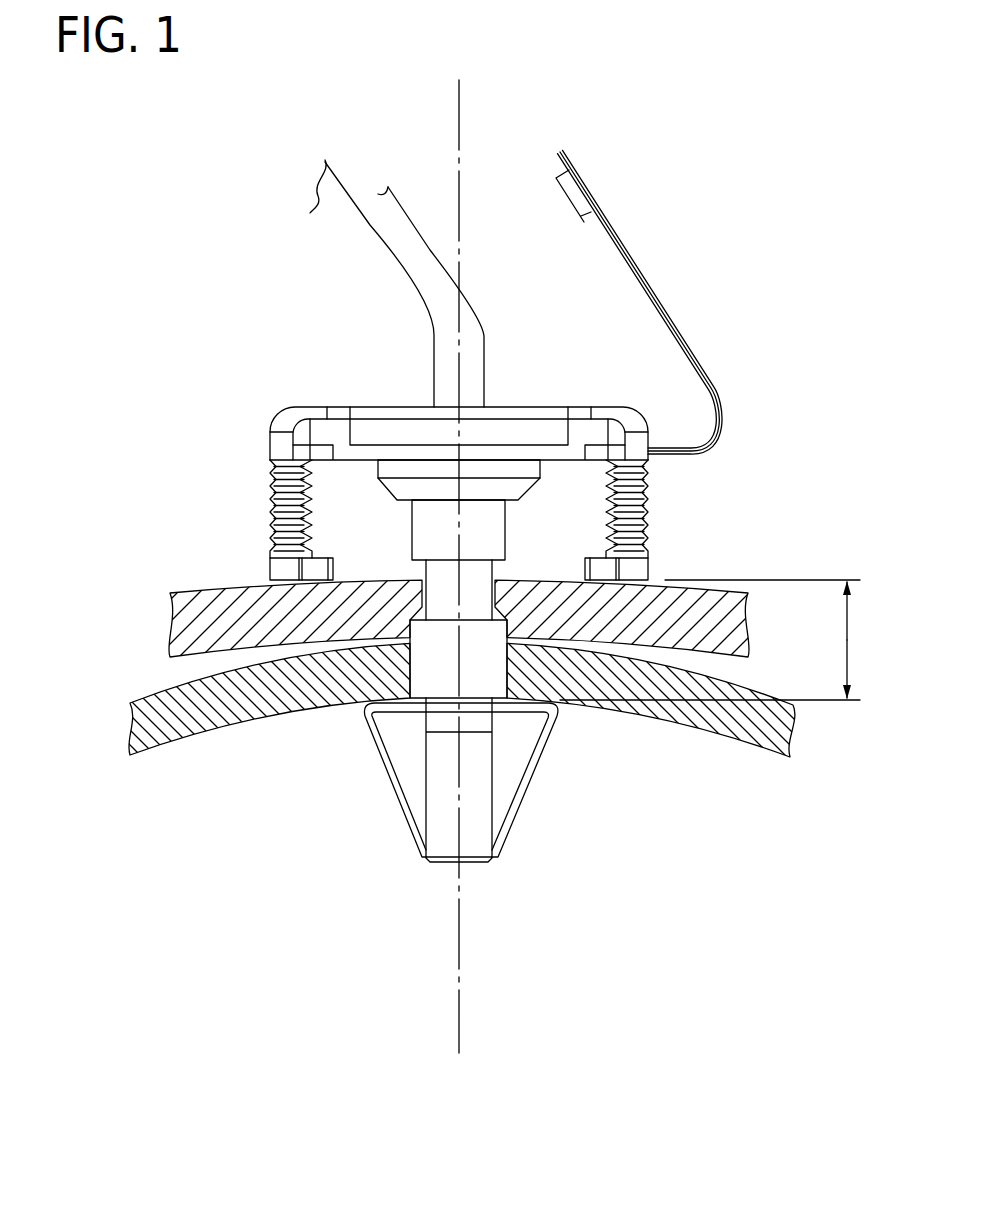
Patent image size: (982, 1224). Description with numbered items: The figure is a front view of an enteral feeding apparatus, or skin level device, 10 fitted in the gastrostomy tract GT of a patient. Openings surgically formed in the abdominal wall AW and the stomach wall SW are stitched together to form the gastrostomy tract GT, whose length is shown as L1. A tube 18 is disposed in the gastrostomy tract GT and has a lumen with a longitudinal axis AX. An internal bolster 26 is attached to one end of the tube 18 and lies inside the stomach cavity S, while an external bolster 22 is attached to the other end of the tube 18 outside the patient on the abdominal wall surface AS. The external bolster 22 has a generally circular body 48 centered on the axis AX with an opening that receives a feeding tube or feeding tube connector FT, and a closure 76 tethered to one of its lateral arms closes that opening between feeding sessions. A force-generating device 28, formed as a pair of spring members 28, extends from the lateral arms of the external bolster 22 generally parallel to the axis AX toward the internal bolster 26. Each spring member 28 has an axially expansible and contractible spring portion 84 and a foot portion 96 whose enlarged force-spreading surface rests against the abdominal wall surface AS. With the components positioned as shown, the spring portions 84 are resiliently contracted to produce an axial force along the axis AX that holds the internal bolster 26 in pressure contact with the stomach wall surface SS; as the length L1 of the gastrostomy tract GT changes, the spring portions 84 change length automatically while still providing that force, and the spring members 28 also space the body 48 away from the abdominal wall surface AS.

The enteral feeding apparatus 10 is at (245, 313).
The external bolster 22 is at (366, 402).
The body 48 is at (517, 400).
The closure 76 is at (638, 258).
The force-generating device 28 is at (268, 478).
The spring portion 84 is at (272, 516).
The foot portion 96 is at (267, 582).
The tube 18 is at (423, 577).
The internal bolster 26 is at (367, 805).
The feeding tube FT is at (388, 188).
The abdominal wall surface AS is at (197, 593).
The abdominal wall AW is at (170, 618).
The stomach wall SW is at (801, 748).
The stomach wall surface SS is at (705, 735).
The stomach cavity S is at (560, 820).
The longitudinal axis AX is at (460, 1012).
The gastrostomy tract GT is at (722, 640).
The length of the gastrostomy tract L1 is at (722, 640).